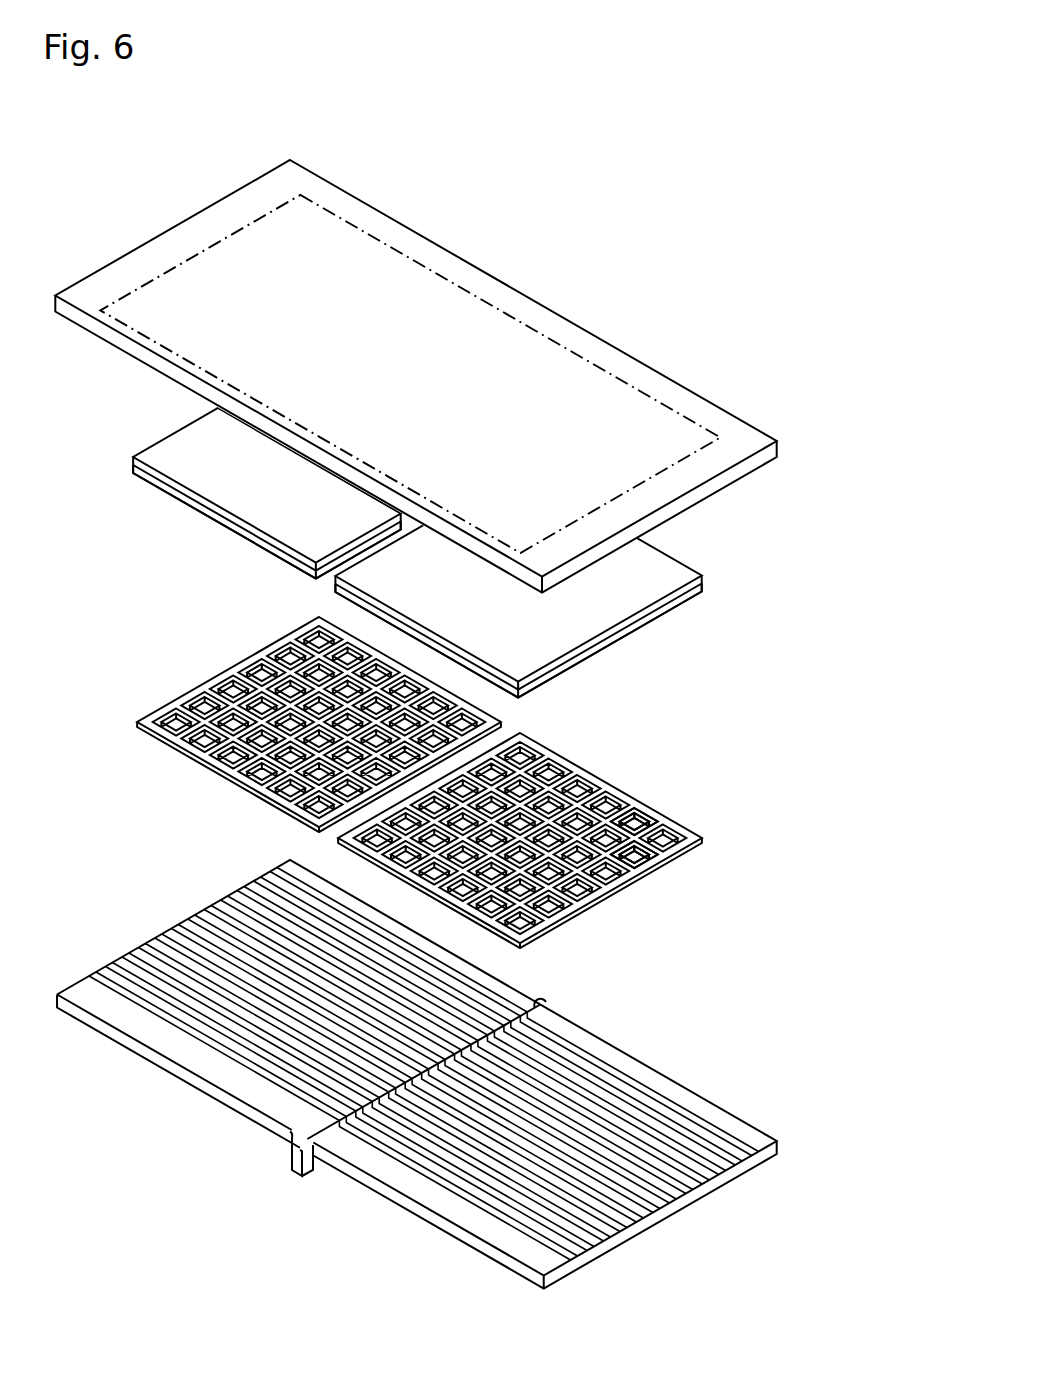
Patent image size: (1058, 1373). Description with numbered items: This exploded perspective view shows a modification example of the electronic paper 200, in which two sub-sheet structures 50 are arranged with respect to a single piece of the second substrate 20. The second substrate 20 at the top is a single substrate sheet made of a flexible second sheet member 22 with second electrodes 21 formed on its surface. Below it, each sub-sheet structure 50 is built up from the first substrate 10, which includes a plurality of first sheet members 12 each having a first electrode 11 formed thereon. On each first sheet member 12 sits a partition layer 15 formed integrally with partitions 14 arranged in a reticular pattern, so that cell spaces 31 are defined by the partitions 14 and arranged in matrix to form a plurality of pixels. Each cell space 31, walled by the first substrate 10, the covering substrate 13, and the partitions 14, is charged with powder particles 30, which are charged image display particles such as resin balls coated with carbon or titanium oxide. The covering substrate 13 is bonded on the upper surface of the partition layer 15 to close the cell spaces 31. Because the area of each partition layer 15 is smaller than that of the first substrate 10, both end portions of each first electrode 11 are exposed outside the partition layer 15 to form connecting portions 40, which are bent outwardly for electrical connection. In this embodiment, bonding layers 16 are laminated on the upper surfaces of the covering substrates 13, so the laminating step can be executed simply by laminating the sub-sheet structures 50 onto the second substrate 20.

The electronic paper 200 is at (623, 238).
The second substrate 20 is at (365, 127).
The second electrodes 21 is at (443, 298).
The second sheet member 22 is at (272, 188).
The sub-sheet structure 50 is at (800, 540).
The bonding layers 16 is at (188, 474).
The covering substrate 13 is at (173, 504).
The partitions 14 is at (222, 677).
The partition layer 15 is at (610, 785).
The cell space 31 is at (637, 827).
The powder particles 30 is at (648, 852).
The first substrate 10 is at (655, 1058).
The first electrode 11 is at (182, 1012).
The first sheet member 12 is at (563, 1012).
The connecting portion 40 is at (227, 867).